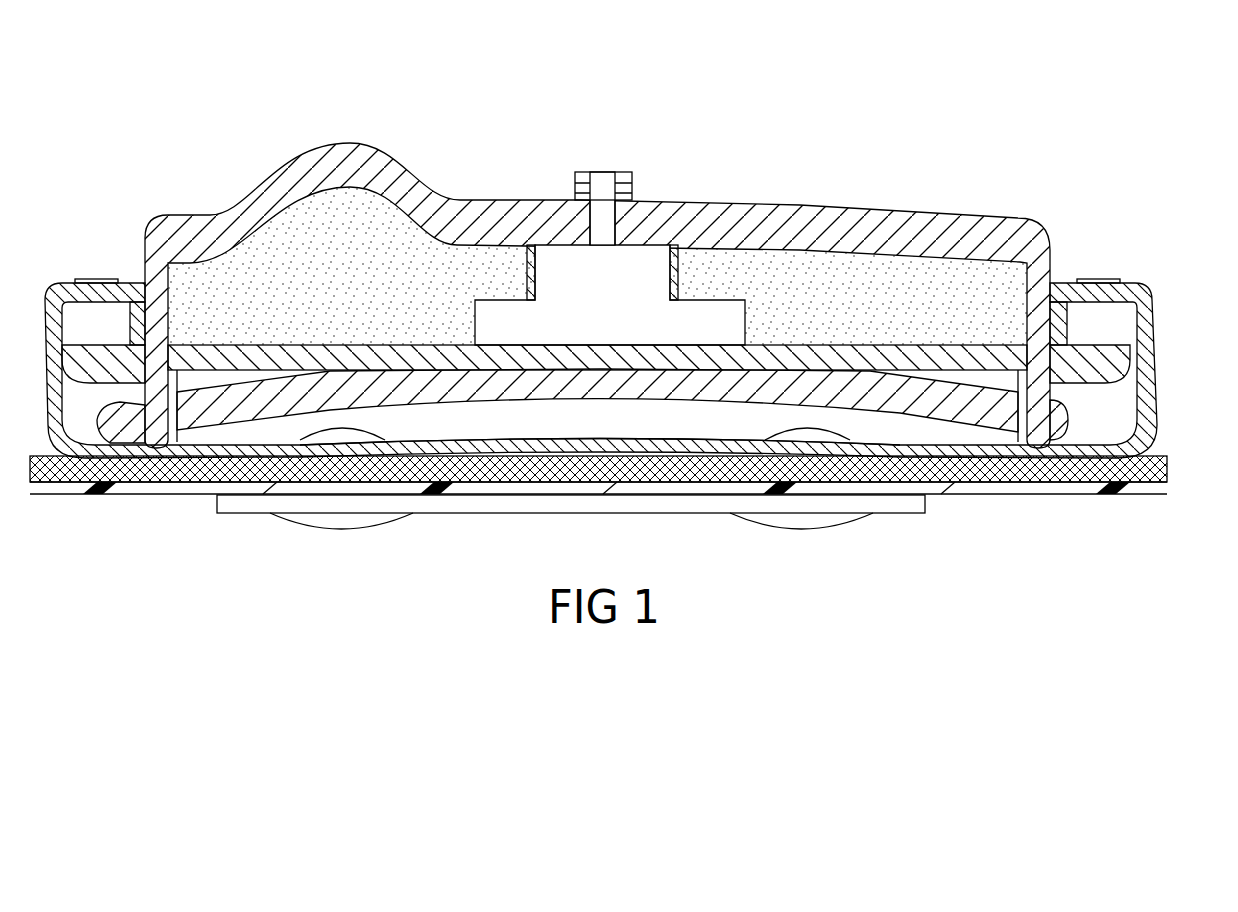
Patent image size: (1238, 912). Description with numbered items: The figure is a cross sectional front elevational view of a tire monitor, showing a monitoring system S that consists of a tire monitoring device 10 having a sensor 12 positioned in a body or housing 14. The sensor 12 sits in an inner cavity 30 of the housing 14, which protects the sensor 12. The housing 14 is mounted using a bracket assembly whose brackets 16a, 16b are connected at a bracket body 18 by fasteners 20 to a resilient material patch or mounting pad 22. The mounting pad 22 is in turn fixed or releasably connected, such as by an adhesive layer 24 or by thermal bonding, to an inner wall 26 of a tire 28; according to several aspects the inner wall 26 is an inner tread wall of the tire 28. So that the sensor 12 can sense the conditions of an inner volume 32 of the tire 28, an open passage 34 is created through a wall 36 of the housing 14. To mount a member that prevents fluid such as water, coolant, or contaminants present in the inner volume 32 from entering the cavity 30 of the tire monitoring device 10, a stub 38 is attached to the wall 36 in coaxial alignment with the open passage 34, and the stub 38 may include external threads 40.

The tire monitoring device 10 is at (993, 127).
The sensor 12 is at (708, 310).
The housing 14 is at (930, 225).
The bracket 16a is at (1153, 380).
The bracket 16b is at (1115, 358).
The bracket body 18 is at (530, 445).
The fasteners 20 is at (337, 437).
The mounting pad 22 is at (670, 473).
The adhesive layer 24 is at (553, 498).
The inner wall 26 is at (1155, 463).
The tire 28 is at (1012, 488).
The inner cavity 30 is at (1005, 288).
The inner volume 32 is at (337, 93).
The open passage 34 is at (603, 220).
The wall 36 is at (627, 230).
The stub 38 is at (627, 182).
The external threads 40 is at (573, 183).
The monitoring system S is at (887, 157).